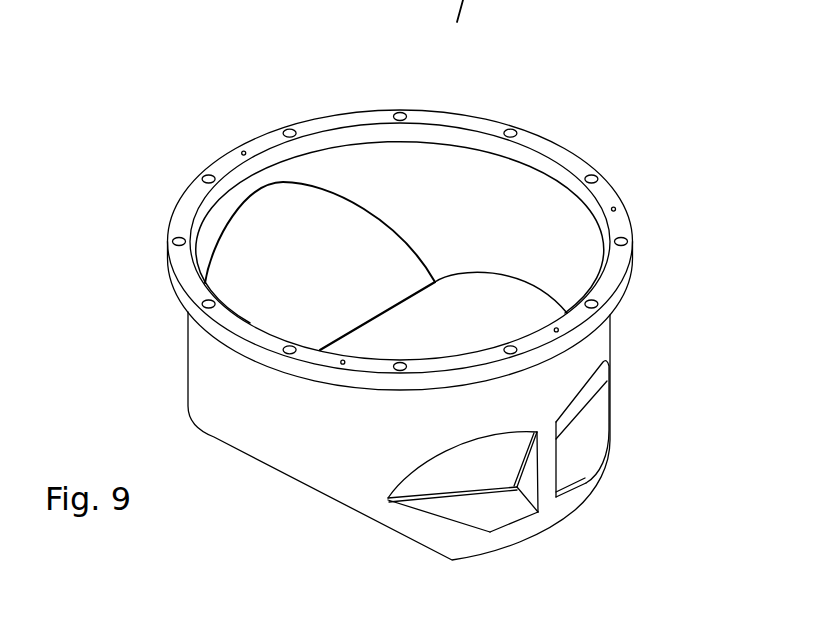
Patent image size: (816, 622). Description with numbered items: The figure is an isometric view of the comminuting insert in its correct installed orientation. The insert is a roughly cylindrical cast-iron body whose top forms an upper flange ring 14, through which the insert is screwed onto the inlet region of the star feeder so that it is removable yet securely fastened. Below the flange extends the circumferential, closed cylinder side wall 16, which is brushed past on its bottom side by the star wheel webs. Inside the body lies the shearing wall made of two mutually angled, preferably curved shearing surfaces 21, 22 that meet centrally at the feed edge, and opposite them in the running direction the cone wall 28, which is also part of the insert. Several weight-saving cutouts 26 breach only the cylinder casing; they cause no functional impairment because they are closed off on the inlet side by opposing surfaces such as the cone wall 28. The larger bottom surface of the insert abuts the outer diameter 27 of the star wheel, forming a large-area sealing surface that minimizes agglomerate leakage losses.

The flange ring 14 is at (542, 140).
The cylinder side wall 16 is at (540, 192).
The outer diameter of the star wheel 27 is at (532, 283).
The cone wall 28 is at (285, 233).
The cutouts 26 is at (586, 481).
The first shearing surface 21 is at (485, 512).
The second shearing surface 22 is at (590, 440).